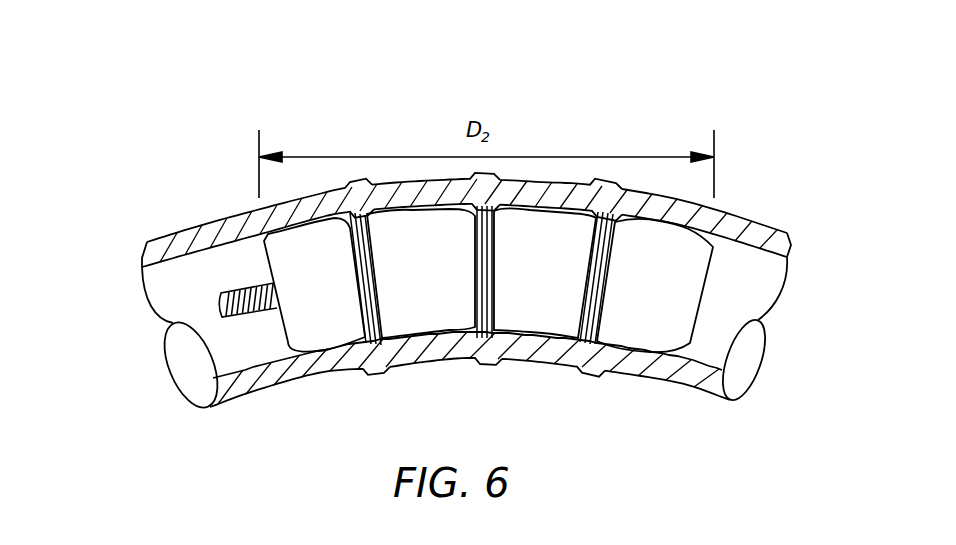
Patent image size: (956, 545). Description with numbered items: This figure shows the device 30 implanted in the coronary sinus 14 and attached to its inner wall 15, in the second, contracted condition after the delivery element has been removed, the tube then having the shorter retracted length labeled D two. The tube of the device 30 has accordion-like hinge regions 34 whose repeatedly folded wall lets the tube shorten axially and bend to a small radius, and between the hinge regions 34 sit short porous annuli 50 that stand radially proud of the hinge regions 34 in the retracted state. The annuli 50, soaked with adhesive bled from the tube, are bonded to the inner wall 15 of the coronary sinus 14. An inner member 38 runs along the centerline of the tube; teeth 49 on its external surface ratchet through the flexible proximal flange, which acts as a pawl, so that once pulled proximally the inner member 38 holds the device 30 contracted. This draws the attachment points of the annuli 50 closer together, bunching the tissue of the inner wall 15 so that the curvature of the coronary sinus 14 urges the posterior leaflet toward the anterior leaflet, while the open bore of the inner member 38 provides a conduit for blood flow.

The coronary sinus 14 is at (749, 233).
The inner wall of the coronary sinus 15 is at (700, 373).
The device 30 is at (435, 152).
The hinge region 34 is at (393, 206).
The inner member 38 is at (232, 292).
The teeth 49 is at (245, 300).
The porous annulus 50 is at (548, 230).